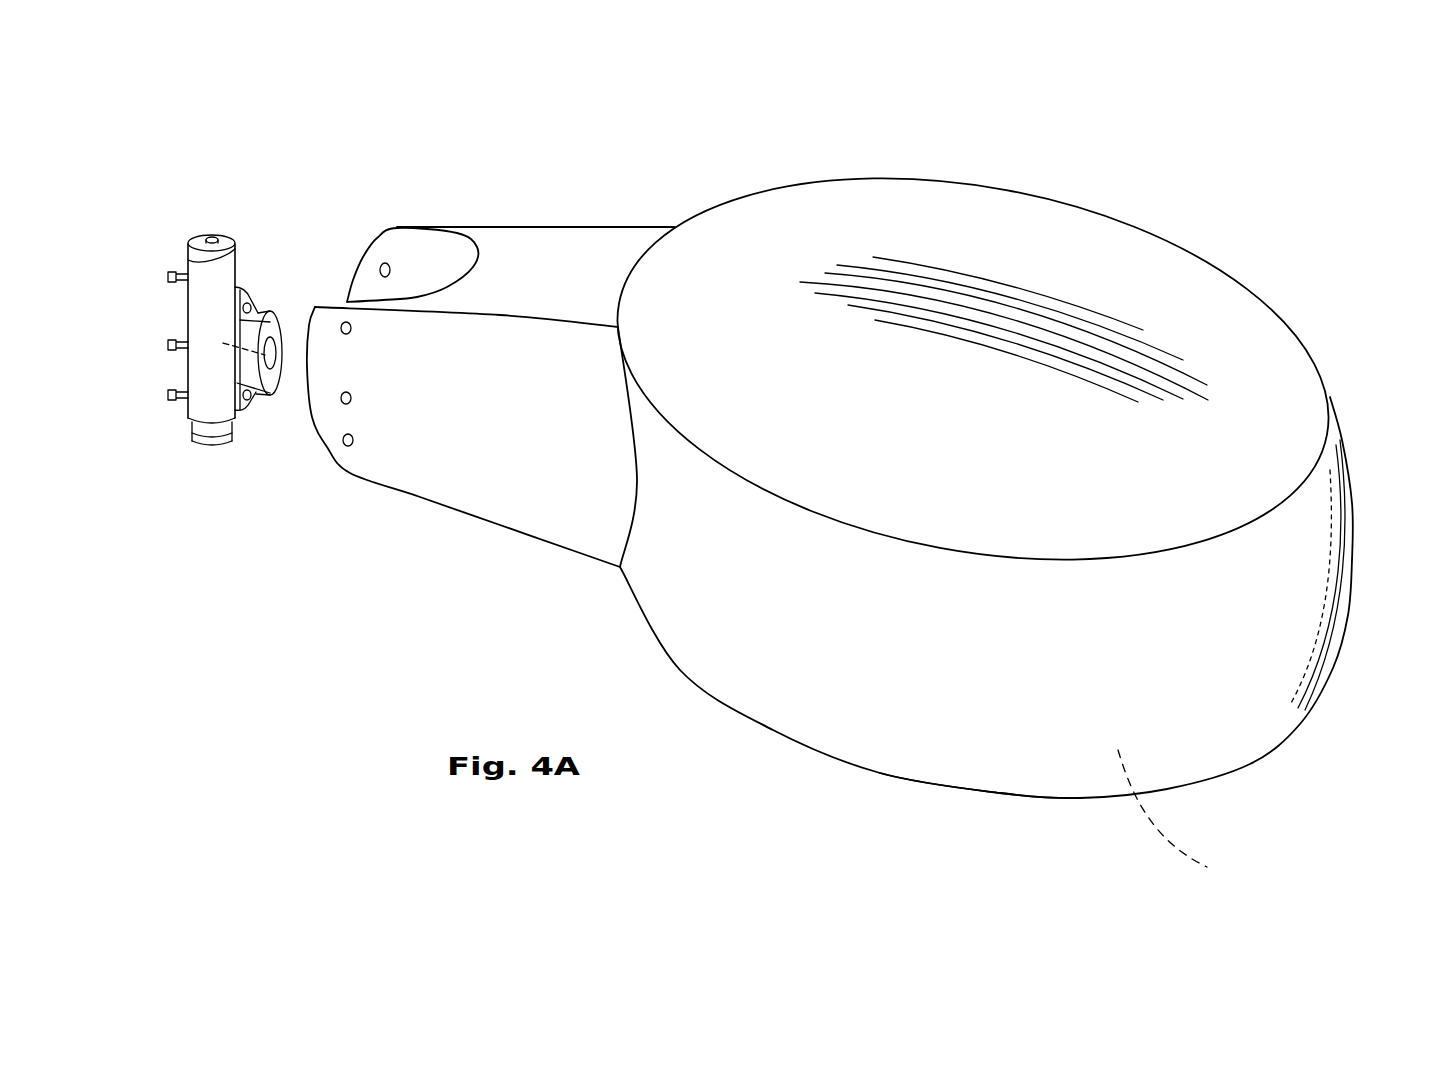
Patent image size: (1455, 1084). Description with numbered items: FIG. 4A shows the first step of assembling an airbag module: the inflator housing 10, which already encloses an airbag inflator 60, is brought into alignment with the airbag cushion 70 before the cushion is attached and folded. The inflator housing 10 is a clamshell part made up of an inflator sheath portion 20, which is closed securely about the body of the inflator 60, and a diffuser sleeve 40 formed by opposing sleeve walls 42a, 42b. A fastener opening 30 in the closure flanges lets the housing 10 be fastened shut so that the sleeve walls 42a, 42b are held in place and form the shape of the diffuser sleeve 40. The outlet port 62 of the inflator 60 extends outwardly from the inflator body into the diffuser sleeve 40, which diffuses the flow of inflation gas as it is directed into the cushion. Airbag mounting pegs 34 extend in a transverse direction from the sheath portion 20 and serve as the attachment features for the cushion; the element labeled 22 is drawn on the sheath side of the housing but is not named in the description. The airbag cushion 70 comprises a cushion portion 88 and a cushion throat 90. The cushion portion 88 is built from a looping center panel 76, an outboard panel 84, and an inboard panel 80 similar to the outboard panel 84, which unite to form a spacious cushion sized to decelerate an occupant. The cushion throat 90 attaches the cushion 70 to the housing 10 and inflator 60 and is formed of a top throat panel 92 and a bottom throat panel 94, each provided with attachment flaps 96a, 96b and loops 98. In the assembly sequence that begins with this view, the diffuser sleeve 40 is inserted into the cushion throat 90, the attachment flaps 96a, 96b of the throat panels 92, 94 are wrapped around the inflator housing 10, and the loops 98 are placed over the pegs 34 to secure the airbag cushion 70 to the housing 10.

The inflator housing 10 is at (288, 164).
The inflator sheath portion 20 is at (170, 428).
The mounting body 22 is at (197, 318).
The fastener opening 30 is at (237, 288).
The airbag mounting pegs 34 is at (195, 350).
The diffuser sleeve 40 is at (283, 404).
The sleeve wall 42a is at (253, 372).
The sleeve wall 42b is at (272, 333).
The airbag inflator 60 is at (198, 264).
The outlet port 62 is at (277, 347).
The airbag cushion 70 is at (1352, 354).
The looping center panel 76 is at (817, 692).
The inboard panel 80 is at (984, 404).
The outboard panel 84 is at (1183, 818).
The cushion portion 88 is at (909, 801).
The cushion throat 90 is at (448, 536).
The top throat panel 92 is at (514, 474).
The bottom throat panel 94 is at (542, 258).
The attachment flap 96a is at (399, 378).
The attachment flap 96b is at (402, 240).
The loops 98 is at (353, 442).